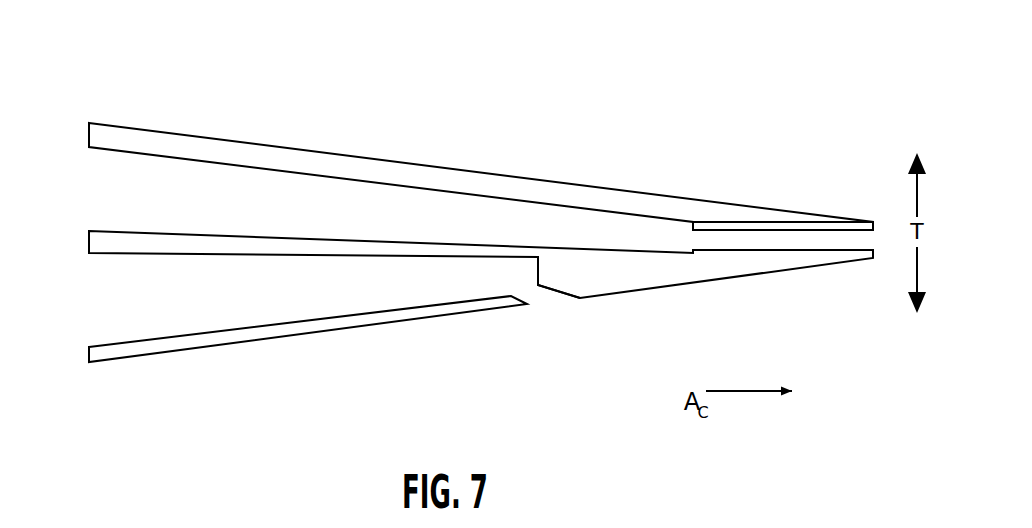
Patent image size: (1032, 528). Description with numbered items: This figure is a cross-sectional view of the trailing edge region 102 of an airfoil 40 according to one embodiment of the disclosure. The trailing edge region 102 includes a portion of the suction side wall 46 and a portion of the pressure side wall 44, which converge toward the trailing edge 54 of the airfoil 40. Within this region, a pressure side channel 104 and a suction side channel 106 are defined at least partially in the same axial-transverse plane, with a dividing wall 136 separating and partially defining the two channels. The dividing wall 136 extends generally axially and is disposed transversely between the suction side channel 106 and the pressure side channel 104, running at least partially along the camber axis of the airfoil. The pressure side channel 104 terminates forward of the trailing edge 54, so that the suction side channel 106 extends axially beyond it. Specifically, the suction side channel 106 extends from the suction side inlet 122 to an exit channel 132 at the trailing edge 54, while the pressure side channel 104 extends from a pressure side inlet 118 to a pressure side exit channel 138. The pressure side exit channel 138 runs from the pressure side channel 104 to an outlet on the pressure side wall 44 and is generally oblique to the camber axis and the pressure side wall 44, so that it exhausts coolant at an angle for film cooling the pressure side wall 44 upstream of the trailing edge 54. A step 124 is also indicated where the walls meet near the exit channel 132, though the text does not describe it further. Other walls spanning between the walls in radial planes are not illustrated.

The airfoil 40 is at (735, 89).
The pressure side wall 44 is at (365, 325).
The suction side wall 46 is at (391, 160).
The trailing edge 54 is at (874, 226).
The trailing edge region 102 is at (764, 154).
The pressure side channel 104 is at (255, 300).
The suction side channel 106 is at (252, 216).
The pressure side inlet 118 is at (276, 325).
The suction side inlet 122 is at (456, 155).
The step 124 is at (696, 228).
The exit channel 132 is at (789, 230).
The dividing wall 136 is at (179, 243).
The pressure side exit channel 138 is at (541, 302).